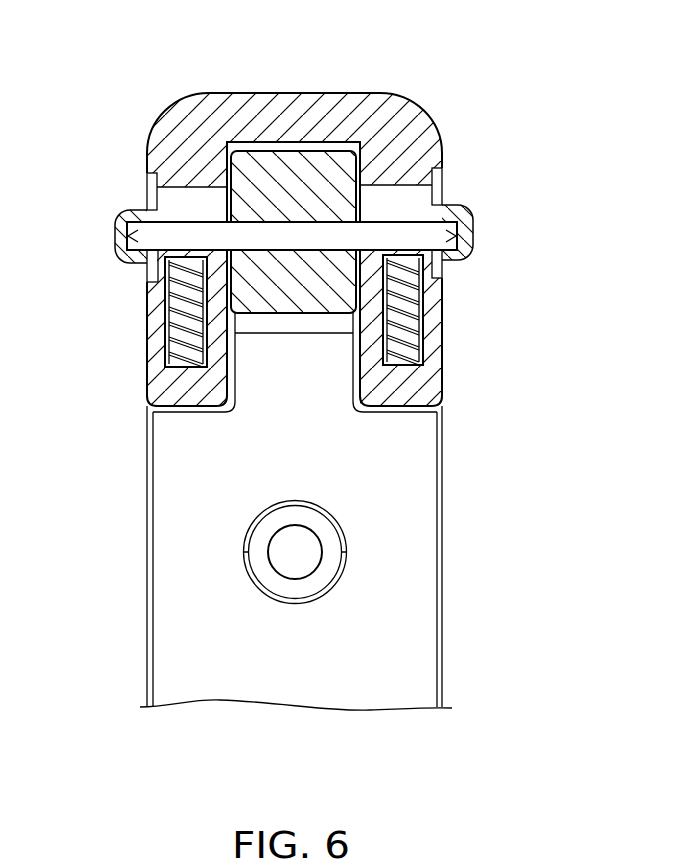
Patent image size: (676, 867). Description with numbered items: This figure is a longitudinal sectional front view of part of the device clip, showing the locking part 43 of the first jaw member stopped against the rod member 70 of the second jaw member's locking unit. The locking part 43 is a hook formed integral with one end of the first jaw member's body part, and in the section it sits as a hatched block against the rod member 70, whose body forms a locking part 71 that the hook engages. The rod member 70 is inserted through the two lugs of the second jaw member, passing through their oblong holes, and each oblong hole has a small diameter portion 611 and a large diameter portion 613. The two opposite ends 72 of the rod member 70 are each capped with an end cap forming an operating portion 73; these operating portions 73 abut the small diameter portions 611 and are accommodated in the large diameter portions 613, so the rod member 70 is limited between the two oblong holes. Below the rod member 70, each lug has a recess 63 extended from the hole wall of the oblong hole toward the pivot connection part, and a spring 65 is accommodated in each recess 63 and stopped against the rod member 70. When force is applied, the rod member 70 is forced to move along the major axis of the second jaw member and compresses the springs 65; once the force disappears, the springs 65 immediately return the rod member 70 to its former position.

The locking part 43 is at (312, 185).
The recess 63 is at (177, 340).
The spring 65 is at (285, 313).
The rod member 70 is at (297, 140).
The locking part 71 is at (263, 238).
The opposite ends 72 is at (128, 215).
The operating portion 73 is at (127, 257).
The small diameter portion 611 is at (437, 186).
The large diameter portion 613 is at (442, 172).